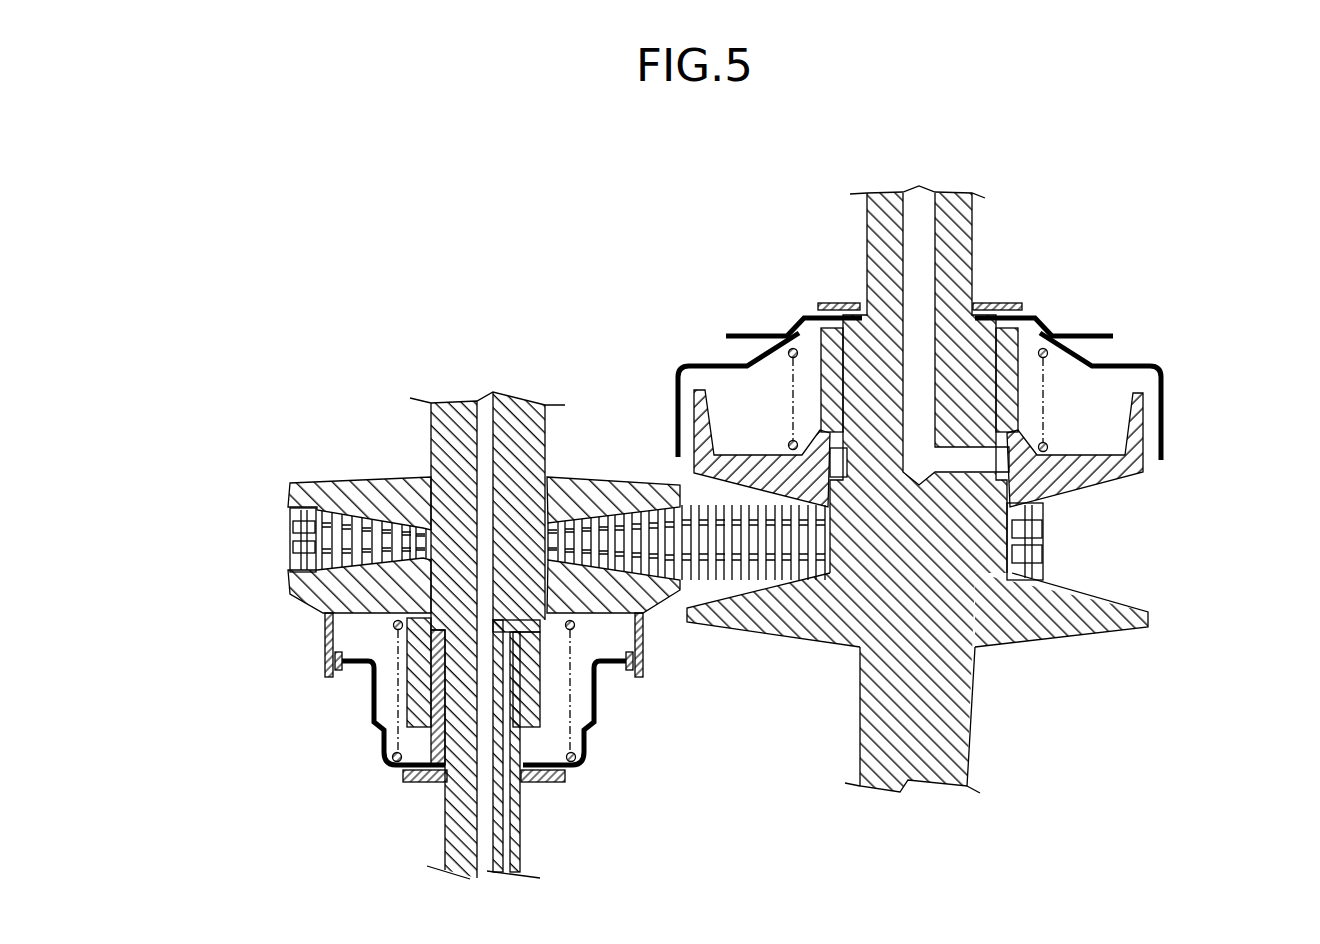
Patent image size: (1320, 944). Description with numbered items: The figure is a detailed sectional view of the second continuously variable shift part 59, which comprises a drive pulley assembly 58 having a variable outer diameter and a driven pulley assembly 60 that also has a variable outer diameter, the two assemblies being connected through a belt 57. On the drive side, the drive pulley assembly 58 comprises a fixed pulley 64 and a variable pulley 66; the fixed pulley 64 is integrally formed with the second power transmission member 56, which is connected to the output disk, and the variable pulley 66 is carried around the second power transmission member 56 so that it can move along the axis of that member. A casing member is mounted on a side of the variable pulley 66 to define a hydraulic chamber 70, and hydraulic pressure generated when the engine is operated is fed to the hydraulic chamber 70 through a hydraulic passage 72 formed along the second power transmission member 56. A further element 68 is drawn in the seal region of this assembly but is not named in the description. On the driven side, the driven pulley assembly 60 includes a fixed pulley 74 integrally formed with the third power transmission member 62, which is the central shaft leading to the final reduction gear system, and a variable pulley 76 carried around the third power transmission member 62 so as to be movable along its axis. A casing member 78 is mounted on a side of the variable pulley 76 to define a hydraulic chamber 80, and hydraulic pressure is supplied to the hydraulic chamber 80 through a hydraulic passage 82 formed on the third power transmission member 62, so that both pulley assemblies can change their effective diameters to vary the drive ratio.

The second power transmission member 56 is at (522, 433).
The belt 57 is at (727, 567).
The drive pulley assembly 58 is at (450, 630).
The second continuously variable shift part 59 is at (686, 676).
The driven pulley assembly 60 is at (977, 489).
The third power transmission member 62 is at (940, 489).
The fixed pulley 64 is at (598, 478).
The variable pulley 66 is at (655, 612).
The seal 68 is at (590, 720).
The hydraulic chamber 70 is at (600, 650).
The hydraulic passage 72 is at (505, 808).
The fixed pulley 74 is at (1063, 630).
The variable pulley 76 is at (1098, 452).
The casing member 78 is at (1098, 353).
The hydraulic chamber 80 is at (1075, 356).
The hydraulic passage 82 is at (925, 240).